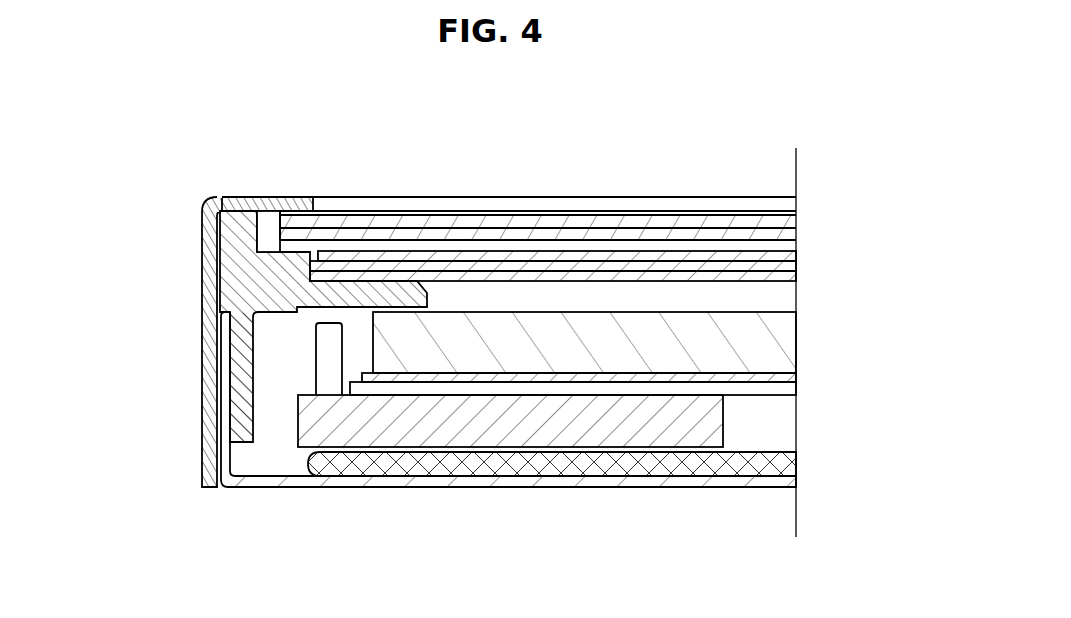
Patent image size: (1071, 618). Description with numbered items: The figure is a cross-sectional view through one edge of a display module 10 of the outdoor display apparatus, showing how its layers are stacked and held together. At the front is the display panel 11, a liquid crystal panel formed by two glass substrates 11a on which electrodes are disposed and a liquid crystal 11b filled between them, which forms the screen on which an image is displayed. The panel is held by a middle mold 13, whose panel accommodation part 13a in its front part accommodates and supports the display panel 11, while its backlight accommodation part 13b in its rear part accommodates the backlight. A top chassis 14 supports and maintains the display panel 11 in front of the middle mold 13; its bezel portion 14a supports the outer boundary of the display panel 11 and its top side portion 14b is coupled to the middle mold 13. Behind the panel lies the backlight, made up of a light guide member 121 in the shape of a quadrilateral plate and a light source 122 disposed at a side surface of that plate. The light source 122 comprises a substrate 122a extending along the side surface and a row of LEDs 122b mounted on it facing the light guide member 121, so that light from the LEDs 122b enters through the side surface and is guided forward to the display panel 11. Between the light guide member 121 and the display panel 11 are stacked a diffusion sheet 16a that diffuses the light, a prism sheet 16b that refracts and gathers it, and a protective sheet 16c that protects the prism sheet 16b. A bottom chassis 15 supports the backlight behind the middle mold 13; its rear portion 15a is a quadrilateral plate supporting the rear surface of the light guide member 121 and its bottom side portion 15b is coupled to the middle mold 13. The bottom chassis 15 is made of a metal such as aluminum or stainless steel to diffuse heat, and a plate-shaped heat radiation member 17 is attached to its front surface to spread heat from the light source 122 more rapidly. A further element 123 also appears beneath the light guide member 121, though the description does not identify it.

The display module 10 is at (544, 122).
The display panel 11 is at (562, 197).
The glass substrates 11a is at (640, 221).
The liquid crystal 11b is at (720, 236).
The middle mold 13 is at (223, 262).
The panel accommodation part 13a is at (264, 232).
The backlight accommodation part 13b is at (258, 348).
The top chassis 14 is at (172, 128).
The bezel portion 14a is at (243, 196).
The top side portion 14b is at (203, 243).
The bottom chassis 15 is at (238, 545).
The rear portion 15a is at (318, 484).
The bottom side portion 15b is at (231, 465).
The diffusion sheet 16a is at (797, 276).
The prism sheet 16b is at (797, 265).
The protective sheet 16c is at (797, 251).
The heat radiation member 17 is at (590, 488).
The light guide member 121 is at (797, 365).
The light source 122 is at (126, 370).
The substrate 122a is at (310, 402).
The LEDs 122b is at (322, 355).
The reflector 123 is at (797, 382).